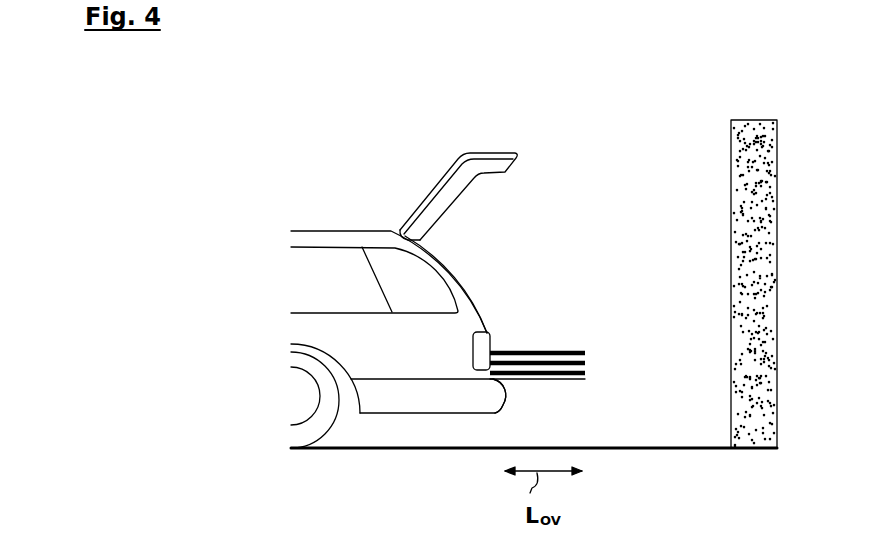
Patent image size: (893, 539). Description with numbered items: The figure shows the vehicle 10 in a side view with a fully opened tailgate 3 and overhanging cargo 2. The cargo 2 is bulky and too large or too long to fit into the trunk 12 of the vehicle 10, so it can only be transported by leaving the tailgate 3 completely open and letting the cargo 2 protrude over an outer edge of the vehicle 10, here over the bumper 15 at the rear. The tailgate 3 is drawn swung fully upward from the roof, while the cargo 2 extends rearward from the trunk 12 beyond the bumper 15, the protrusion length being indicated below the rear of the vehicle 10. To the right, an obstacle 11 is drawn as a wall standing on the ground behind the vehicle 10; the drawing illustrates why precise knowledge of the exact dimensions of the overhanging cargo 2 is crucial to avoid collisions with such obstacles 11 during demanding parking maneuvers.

The vehicle 10 is at (239, 207).
The tailgate 3 is at (497, 153).
The trunk 12 is at (478, 275).
The cargo 2 is at (558, 352).
The bumper 15 is at (497, 405).
The obstacle 11 is at (712, 137).